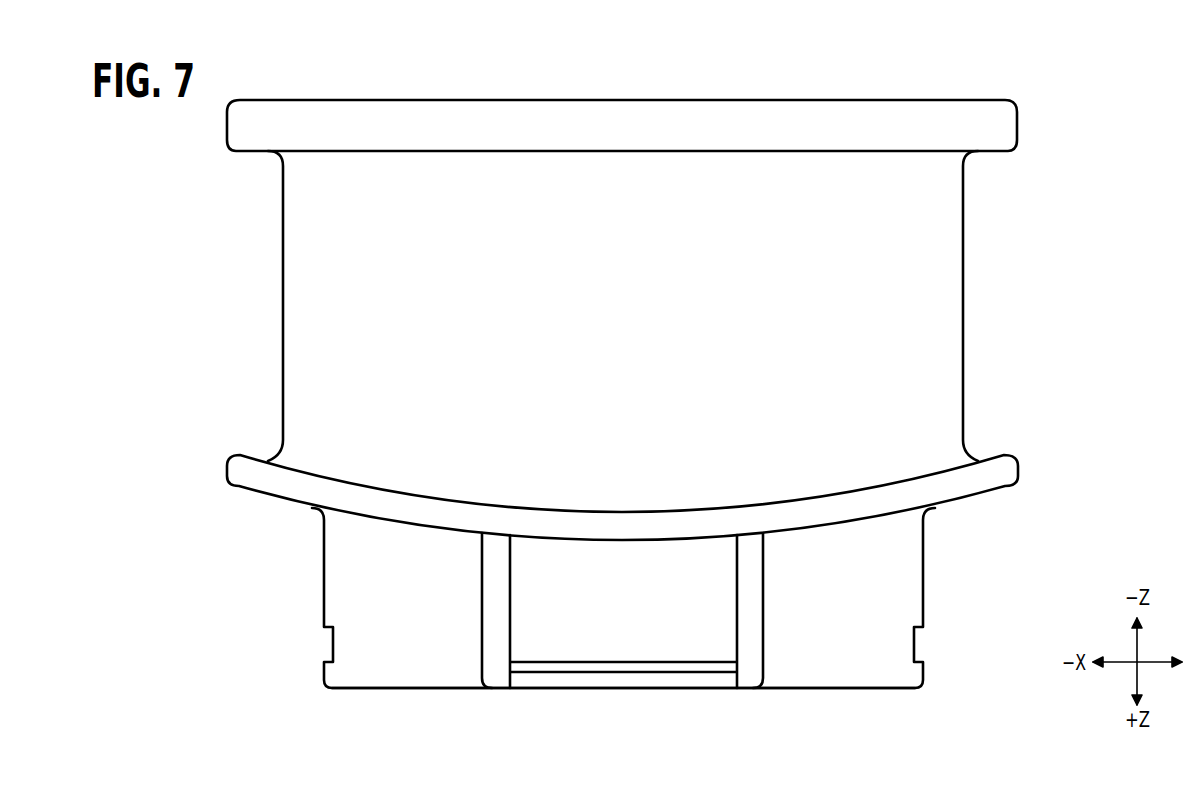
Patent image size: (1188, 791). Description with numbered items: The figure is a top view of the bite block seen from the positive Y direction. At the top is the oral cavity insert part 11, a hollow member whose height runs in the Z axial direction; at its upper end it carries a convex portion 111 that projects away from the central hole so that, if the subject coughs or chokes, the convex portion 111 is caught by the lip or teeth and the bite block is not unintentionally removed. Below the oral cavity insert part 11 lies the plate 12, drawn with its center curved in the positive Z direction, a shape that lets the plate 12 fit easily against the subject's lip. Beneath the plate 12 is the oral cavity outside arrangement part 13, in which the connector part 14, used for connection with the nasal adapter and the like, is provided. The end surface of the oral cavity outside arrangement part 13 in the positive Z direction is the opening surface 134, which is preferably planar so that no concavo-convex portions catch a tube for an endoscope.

The oral cavity insert part 11 is at (698, 280).
The convex portion 111 is at (238, 137).
The plate 12 is at (313, 495).
The oral cavity outside arrangement part 13 is at (343, 583).
The opening surface 134 is at (467, 692).
The connector part 14 is at (643, 612).